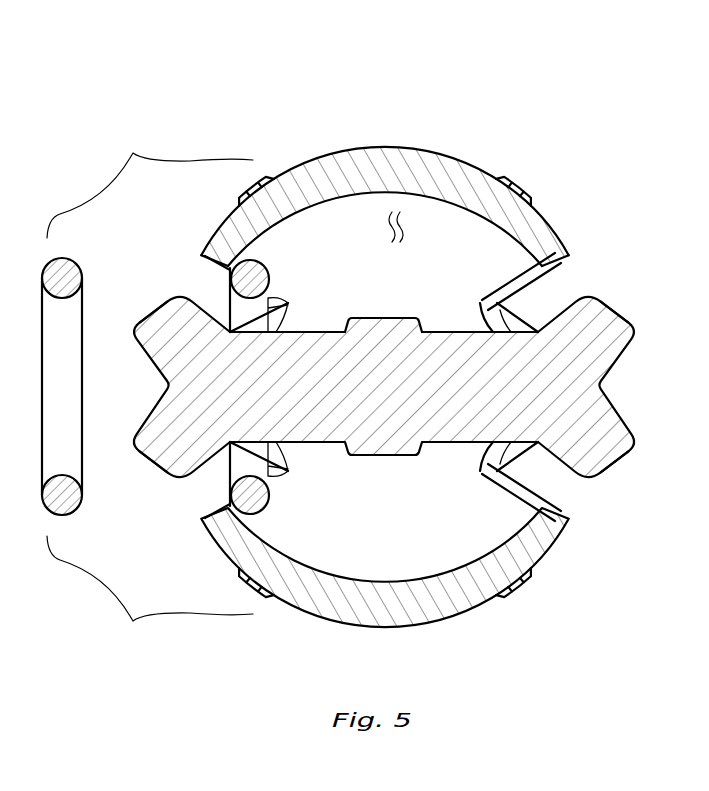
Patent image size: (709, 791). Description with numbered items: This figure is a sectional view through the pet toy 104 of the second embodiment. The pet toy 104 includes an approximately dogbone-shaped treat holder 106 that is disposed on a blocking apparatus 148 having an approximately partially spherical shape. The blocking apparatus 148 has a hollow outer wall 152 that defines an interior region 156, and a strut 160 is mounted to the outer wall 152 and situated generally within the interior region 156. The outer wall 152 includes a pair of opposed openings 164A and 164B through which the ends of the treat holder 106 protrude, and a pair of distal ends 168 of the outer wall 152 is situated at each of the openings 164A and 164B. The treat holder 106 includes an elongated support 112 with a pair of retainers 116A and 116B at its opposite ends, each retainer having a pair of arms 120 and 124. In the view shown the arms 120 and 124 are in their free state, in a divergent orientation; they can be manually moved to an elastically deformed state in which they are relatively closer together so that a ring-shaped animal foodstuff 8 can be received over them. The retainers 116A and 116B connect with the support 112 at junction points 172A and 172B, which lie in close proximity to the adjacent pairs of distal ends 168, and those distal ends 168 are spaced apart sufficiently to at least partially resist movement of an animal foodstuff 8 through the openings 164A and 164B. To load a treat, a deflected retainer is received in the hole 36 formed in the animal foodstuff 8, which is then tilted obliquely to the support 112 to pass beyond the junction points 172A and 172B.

The pet toy 104 is at (281, 140).
The treat holder 106 is at (454, 452).
The elongated support 112 is at (317, 330).
The retainer 116A is at (164, 285).
The retainer 116B is at (615, 285).
The arm 120 is at (152, 311).
The arm 124 is at (141, 465).
The blocking apparatus 148 is at (406, 138).
The outer wall 152 is at (361, 148).
The interior region 156 is at (398, 223).
The strut 160 is at (407, 317).
The opening 164A is at (215, 497).
The opening 164B is at (556, 500).
The distal ends 168 is at (203, 262).
The junction point 172A is at (280, 297).
The junction point 172B is at (503, 306).
The hole 36 is at (64, 477).
The animal foodstuff 8 is at (57, 516).